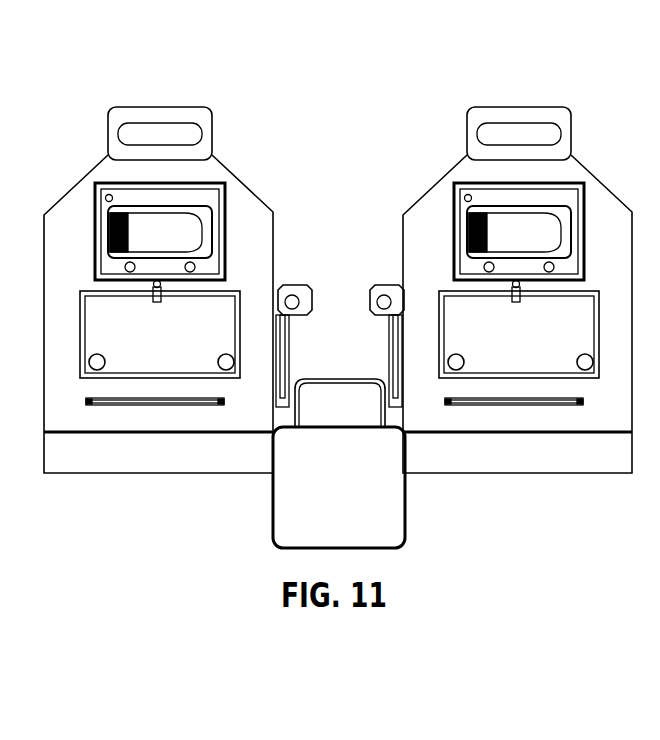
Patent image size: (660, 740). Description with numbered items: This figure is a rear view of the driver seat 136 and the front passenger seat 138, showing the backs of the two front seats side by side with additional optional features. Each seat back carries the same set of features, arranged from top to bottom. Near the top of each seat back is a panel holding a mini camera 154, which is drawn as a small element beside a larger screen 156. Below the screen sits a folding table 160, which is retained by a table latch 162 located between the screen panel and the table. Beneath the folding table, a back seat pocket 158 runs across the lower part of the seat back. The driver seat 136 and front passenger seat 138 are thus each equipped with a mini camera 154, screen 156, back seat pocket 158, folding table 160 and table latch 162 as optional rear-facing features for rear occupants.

The driver seat 136 is at (157, 460).
The front passenger seat 138 is at (517, 318).
The mini camera 154 is at (430, 168).
The screen 156 is at (558, 209).
The back seat pocket 158 is at (529, 464).
The folding table 160 is at (218, 307).
The table latch 162 is at (160, 282).